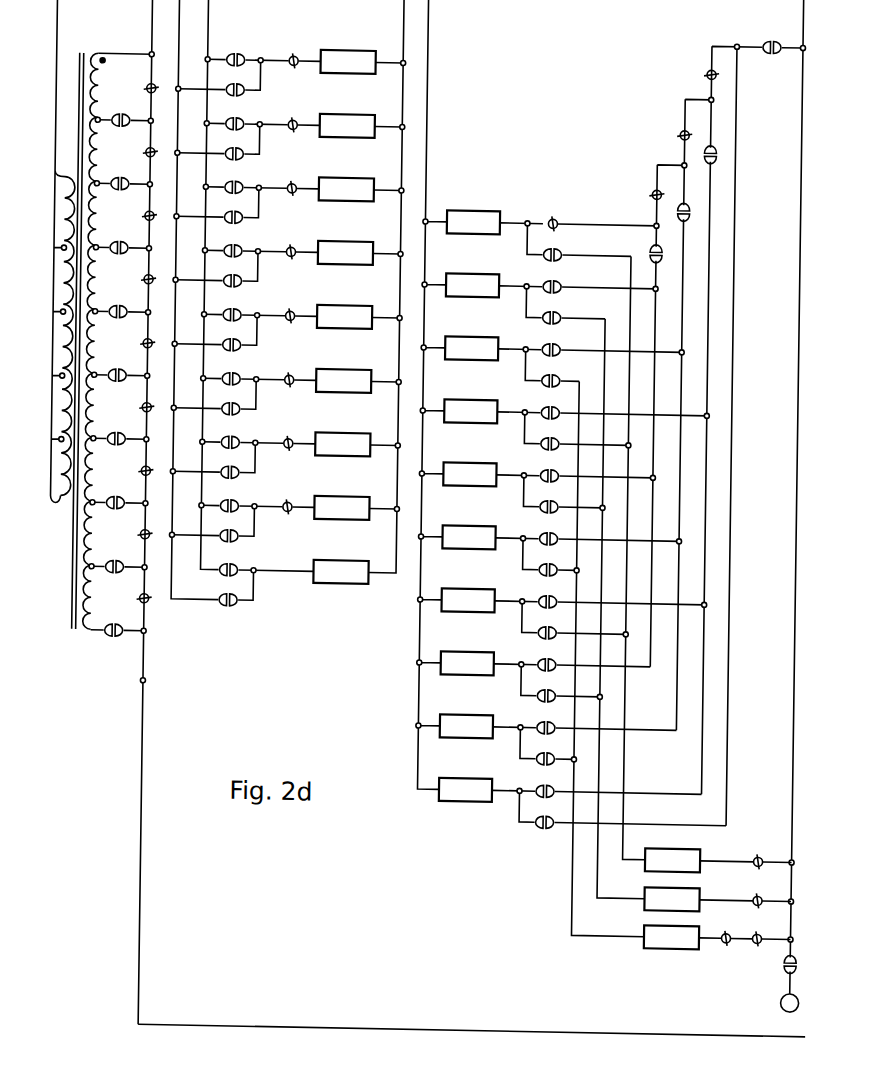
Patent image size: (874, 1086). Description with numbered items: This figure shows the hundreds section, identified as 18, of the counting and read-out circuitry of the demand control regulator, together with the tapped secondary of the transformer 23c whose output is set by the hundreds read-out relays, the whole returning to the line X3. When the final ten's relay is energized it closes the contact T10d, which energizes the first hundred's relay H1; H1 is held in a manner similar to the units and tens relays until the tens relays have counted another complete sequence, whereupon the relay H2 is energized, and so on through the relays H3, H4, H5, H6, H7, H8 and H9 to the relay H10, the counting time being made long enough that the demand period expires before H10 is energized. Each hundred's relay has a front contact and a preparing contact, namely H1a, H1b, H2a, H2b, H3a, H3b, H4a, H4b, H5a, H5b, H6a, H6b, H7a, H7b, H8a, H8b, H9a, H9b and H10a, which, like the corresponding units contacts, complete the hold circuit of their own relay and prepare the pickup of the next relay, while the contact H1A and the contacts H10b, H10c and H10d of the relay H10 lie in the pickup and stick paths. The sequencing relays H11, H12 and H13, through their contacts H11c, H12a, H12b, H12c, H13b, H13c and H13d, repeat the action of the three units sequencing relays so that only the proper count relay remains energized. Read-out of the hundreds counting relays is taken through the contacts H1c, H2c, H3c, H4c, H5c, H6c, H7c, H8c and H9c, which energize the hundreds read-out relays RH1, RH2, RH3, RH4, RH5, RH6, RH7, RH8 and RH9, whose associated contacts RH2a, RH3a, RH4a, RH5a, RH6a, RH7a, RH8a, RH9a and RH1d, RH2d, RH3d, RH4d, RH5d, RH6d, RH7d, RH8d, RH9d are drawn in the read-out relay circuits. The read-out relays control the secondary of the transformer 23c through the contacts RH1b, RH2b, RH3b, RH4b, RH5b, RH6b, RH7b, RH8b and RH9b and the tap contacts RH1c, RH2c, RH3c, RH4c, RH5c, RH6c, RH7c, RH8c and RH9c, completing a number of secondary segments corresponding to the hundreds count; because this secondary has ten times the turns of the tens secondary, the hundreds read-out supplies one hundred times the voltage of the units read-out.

The transformer 18 is at (203, 679).
The transformer 23c is at (91, 59).
The common conductor X3 is at (713, 1029).
The contact T10d is at (775, 35).
The hundreds read-out relay RH1 is at (348, 62).
The hundreds read-out relay RH2 is at (347, 126).
The hundreds read-out relay RH3 is at (346, 189).
The hundreds read-out relay RH4 is at (345, 253).
The hundreds read-out relay RH5 is at (344, 317).
The hundreds read-out relay RH6 is at (343, 381).
The hundreds read-out relay RH7 is at (342, 444).
The hundreds read-out relay RH8 is at (341, 508).
The hundreds read-out relay RH9 is at (340, 572).
The contact of read-out relay RH2 RH2a is at (292, 52).
The contact of read-out relay RH3 RH3a is at (292, 116).
The contact of read-out relay RH4 RH4a is at (292, 180).
The contact of read-out relay RH5 RH5a is at (292, 243).
The contact of read-out relay RH6 RH6a is at (292, 307).
The contact of read-out relay RH7 RH7a is at (292, 371).
The contact of read-out relay RH8 RH8a is at (292, 434).
The contact of read-out relay RH9 RH9a is at (292, 498).
The contact of read-out relay RH1 RH1b is at (143, 91).
The contact of read-out relay RH2 RH2b is at (143, 155).
The contact of read-out relay RH3 RH3b is at (143, 218).
The contact of read-out relay RH4 RH4b is at (143, 282).
The contact of read-out relay RH5 RH5b is at (143, 346).
The contact of read-out relay RH6 RH6b is at (143, 410).
The contact of read-out relay RH7 RH7b is at (143, 474).
The contact of read-out relay RH8 RH8b is at (143, 537).
The contact of read-out relay RH9 RH9b is at (143, 601).
The contact of read-out relay RH1 RH1c is at (113, 122).
The contact of read-out relay RH2 RH2c is at (113, 185).
The contact of read-out relay RH3 RH3c is at (113, 249).
The contact of read-out relay RH4 RH4c is at (113, 313).
The contact of read-out relay RH5 RH5c is at (113, 376).
The contact of read-out relay RH6 RH6c is at (113, 440).
The contact of read-out relay RH7 RH7c is at (113, 504).
The contact of read-out relay RH8 RH8c is at (113, 568).
The contact of read-out relay RH9 RH9c is at (113, 632).
The contact of read-out relay RH1 RH1d is at (234, 83).
The contact of read-out relay RH2 RH2d is at (233, 147).
The contact of read-out relay RH3 RH3d is at (232, 211).
The contact of read-out relay RH4 RH4d is at (231, 274).
The contact of read-out relay RH5 RH5d is at (231, 338).
The contact of read-out relay RH6 RH6d is at (230, 402).
The contact of read-out relay RH7 RH7d is at (229, 466).
The contact of read-out relay RH8 RH8d is at (228, 529).
The contact of read-out relay RH9 RH9d is at (229, 610).
The first hundred's relay H1 is at (473, 222).
The hundred's relay H2 is at (472, 285).
The hundred's relay H3 is at (471, 348).
The hundred's relay H4 is at (470, 411).
The hundred's relay H5 is at (469, 474).
The hundred's relay H6 is at (468, 537).
The hundred's relay H7 is at (467, 600).
The hundred's relay H8 is at (467, 663).
The hundred's relay H9 is at (466, 726).
The hundred's relay H10 is at (465, 790).
The sequencing relay H11 is at (672, 860).
The sequencing relay H12 is at (671, 899).
The sequencing relay H13 is at (671, 937).
The contact of relay H1 H1A is at (560, 206).
The front contact of relay H1 H1a is at (556, 246).
The contact of relay H1 H1b is at (552, 278).
The contact of relay H1 H1c is at (218, 59).
The front contact of relay H2 H2a is at (556, 309).
The contact of relay H2 H2b is at (552, 341).
The contact of relay H2 H2c is at (218, 123).
The front contact of relay H3 H3a is at (556, 372).
The contact of relay H3 H3b is at (552, 404).
The contact of relay H3 H3c is at (218, 186).
The front contact of relay H4 H4a is at (556, 435).
The contact of relay H4 H4b is at (552, 467).
The contact of relay H4 H4c is at (218, 250).
The front contact of relay H5 H5a is at (556, 498).
The contact of relay H5 H5b is at (552, 530).
The contact of relay H5 H5c is at (218, 314).
The front contact of relay H6 H6a is at (556, 561).
The contact of relay H6 H6b is at (552, 593).
The contact of relay H6 H6c is at (218, 378).
The front contact of relay H7 H7a is at (556, 624).
The contact of relay H7 H7b is at (552, 656).
The contact of relay H7 H7c is at (218, 442).
The front contact of relay H8 H8a is at (556, 687).
The contact of relay H8 H8b is at (552, 719).
The contact of relay H8 H8c is at (218, 505).
The front contact of relay H9 H9a is at (556, 750).
The contact of relay H9 H9b is at (552, 782).
The contact of relay H9 H9c is at (218, 569).
The front contact of relay H10 H10a is at (547, 826).
The back contact of relay H10 H10b is at (700, 70).
The back contact of relay H10 H10c is at (768, 920).
The contact of relay H10 H10d is at (789, 967).
The contact of sequencing relay H11 H11c is at (731, 938).
The back contact of sequencing relay H12 H12a is at (647, 190).
The contact of sequencing relay H12 H12b is at (672, 207).
The back contact of sequencing relay H12 H12c is at (764, 851).
The contact of sequencing relay H13 H13b is at (712, 148).
The back contact of sequencing relay H13 H13c is at (768, 883).
The back contact of sequencing relay H13 H13d is at (674, 128).